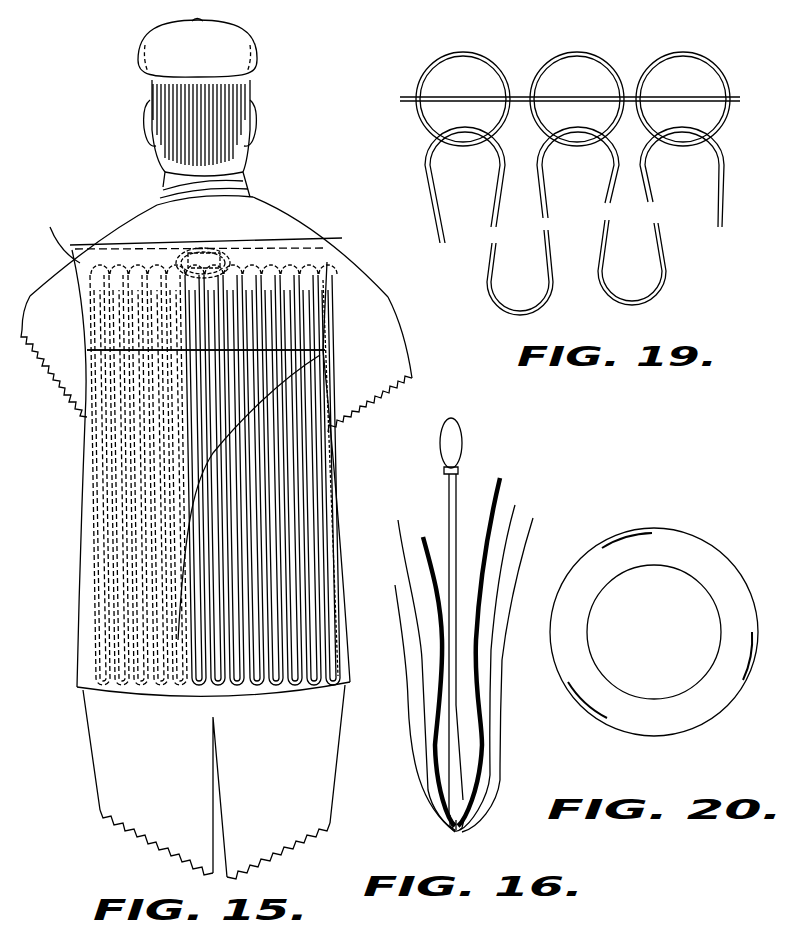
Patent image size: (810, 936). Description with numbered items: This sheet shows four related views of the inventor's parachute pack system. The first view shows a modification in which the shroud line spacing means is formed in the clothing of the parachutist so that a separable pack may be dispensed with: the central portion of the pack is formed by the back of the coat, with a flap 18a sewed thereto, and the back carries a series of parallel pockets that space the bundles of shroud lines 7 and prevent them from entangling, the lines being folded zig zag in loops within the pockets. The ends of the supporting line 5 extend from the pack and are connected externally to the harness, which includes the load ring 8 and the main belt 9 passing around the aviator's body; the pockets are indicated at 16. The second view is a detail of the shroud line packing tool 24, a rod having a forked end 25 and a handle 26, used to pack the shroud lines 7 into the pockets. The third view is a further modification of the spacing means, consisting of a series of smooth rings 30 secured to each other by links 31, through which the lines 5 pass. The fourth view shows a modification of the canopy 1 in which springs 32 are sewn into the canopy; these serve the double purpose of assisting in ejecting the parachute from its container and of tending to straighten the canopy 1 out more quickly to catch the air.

In FIG. 20, the canopy 1 is at (717, 573).
In FIG. 15, the shroud line 5 is at (58, 236).
In FIG. 19, the shroud line 5 is at (497, 206).
In FIG. 16, the shroud line 5 is at (425, 538).
In FIG. 16, the shroud lines 7 is at (395, 585).
In FIG. 15, the load ring 8 is at (173, 257).
In FIG. 15, the main belt 9 is at (207, 257).
In FIG. 15, the fringe strands 16 is at (138, 460).
In FIG. 15, the flap 18a is at (133, 347).
In FIG. 16, the tool 24 is at (457, 500).
In FIG. 16, the forked end 25 is at (458, 827).
In FIG. 16, the handle 26 is at (462, 451).
In FIG. 19, the smooth rings 30 is at (547, 63).
In FIG. 19, the links 31 is at (733, 97).
In FIG. 20, the springs 32 is at (633, 533).